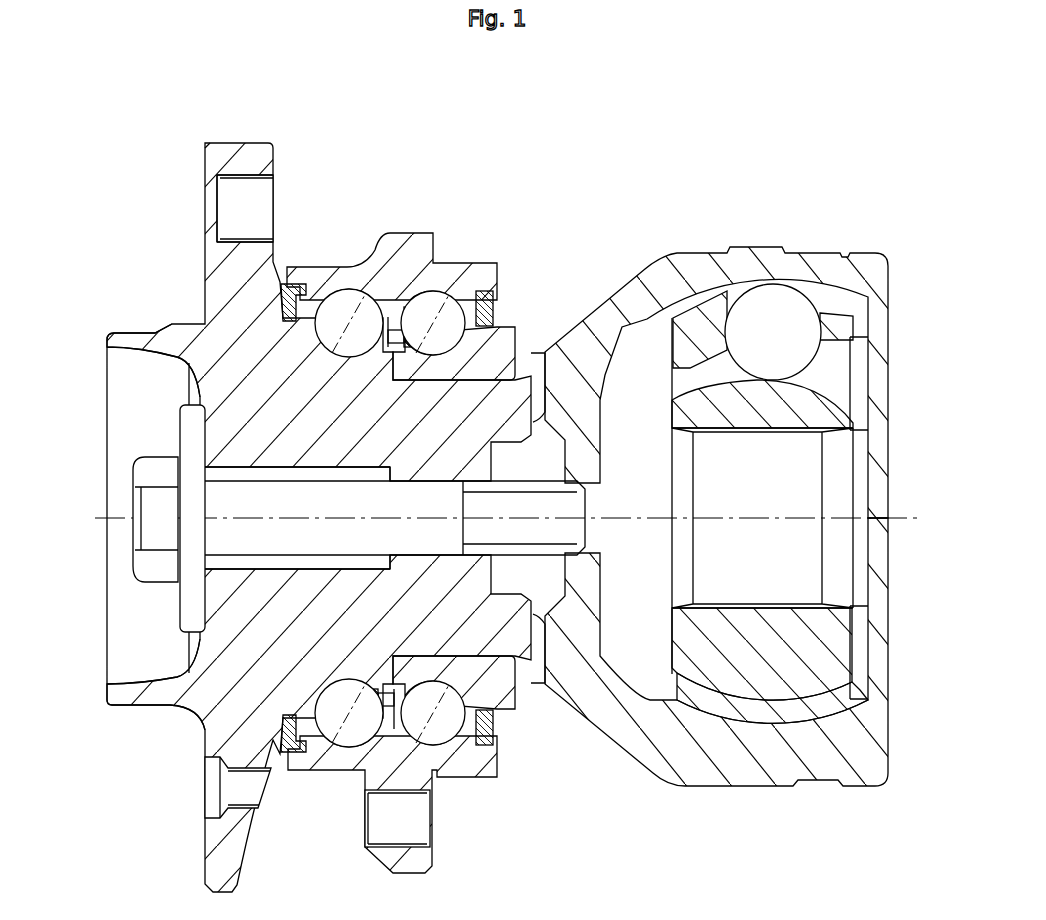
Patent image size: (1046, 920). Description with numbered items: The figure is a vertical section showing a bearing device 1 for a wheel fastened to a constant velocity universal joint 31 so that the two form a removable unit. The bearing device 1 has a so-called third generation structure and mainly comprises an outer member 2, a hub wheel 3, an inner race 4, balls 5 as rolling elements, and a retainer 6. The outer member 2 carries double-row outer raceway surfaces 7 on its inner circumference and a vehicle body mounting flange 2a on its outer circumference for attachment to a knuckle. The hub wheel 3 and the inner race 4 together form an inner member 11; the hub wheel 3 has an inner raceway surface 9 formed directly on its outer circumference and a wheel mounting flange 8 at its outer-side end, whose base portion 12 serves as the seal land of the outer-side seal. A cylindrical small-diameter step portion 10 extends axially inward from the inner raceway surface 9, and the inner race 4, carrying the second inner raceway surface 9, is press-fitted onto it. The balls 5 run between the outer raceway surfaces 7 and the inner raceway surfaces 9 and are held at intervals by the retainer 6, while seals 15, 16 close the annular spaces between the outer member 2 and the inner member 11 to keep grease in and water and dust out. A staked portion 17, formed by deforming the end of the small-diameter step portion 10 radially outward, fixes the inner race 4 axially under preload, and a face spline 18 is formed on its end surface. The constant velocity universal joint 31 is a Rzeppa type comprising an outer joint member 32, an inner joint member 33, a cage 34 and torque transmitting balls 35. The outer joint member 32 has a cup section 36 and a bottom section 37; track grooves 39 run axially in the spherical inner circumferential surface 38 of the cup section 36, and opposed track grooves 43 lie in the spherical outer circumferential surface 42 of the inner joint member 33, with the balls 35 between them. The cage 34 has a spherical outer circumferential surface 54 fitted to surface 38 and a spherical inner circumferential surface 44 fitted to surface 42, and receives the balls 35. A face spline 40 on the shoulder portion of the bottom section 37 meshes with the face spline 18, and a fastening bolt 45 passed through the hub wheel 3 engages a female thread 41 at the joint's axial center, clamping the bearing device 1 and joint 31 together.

The bearing device for a wheel 1 is at (496, 180).
The outer member 2 is at (421, 219).
The vehicle body mounting flange 2a is at (403, 878).
The hub wheel 3 is at (141, 320).
The inner race 4 is at (508, 312).
The balls 5 is at (350, 742).
The retainer 6 is at (398, 687).
The outer raceway surfaces 7 is at (345, 300).
The wheel mounting flange 8 is at (238, 156).
The inner raceway surface 9 is at (330, 342).
The small-diameter step portion 10 is at (470, 637).
The inner member 11 is at (150, 380).
The base portion 12 is at (283, 292).
The seal 15 is at (292, 752).
The seal 16 is at (500, 738).
The staked portion 17 is at (523, 688).
The face spline 18 is at (552, 688).
The constant velocity universal joint 31 is at (788, 214).
The outer joint member 32 is at (672, 240).
The inner joint member 33 is at (868, 432).
The cage 34 is at (720, 300).
The torque transmitting balls 35 is at (766, 285).
The cup section 36 is at (836, 268).
The bottom section 37 is at (560, 400).
The spherical inner circumferential surface 38 is at (817, 718).
The track grooves 39 is at (845, 297).
The face spline 40 is at (538, 380).
The female thread 41 is at (567, 476).
The spherical outer circumferential surface 42 is at (766, 703).
The track grooves 43 is at (845, 392).
The spherical inner circumferential surface 44 is at (718, 708).
The fastening bolt 45 is at (143, 561).
The spherical outer circumferential surface 54 is at (758, 703).